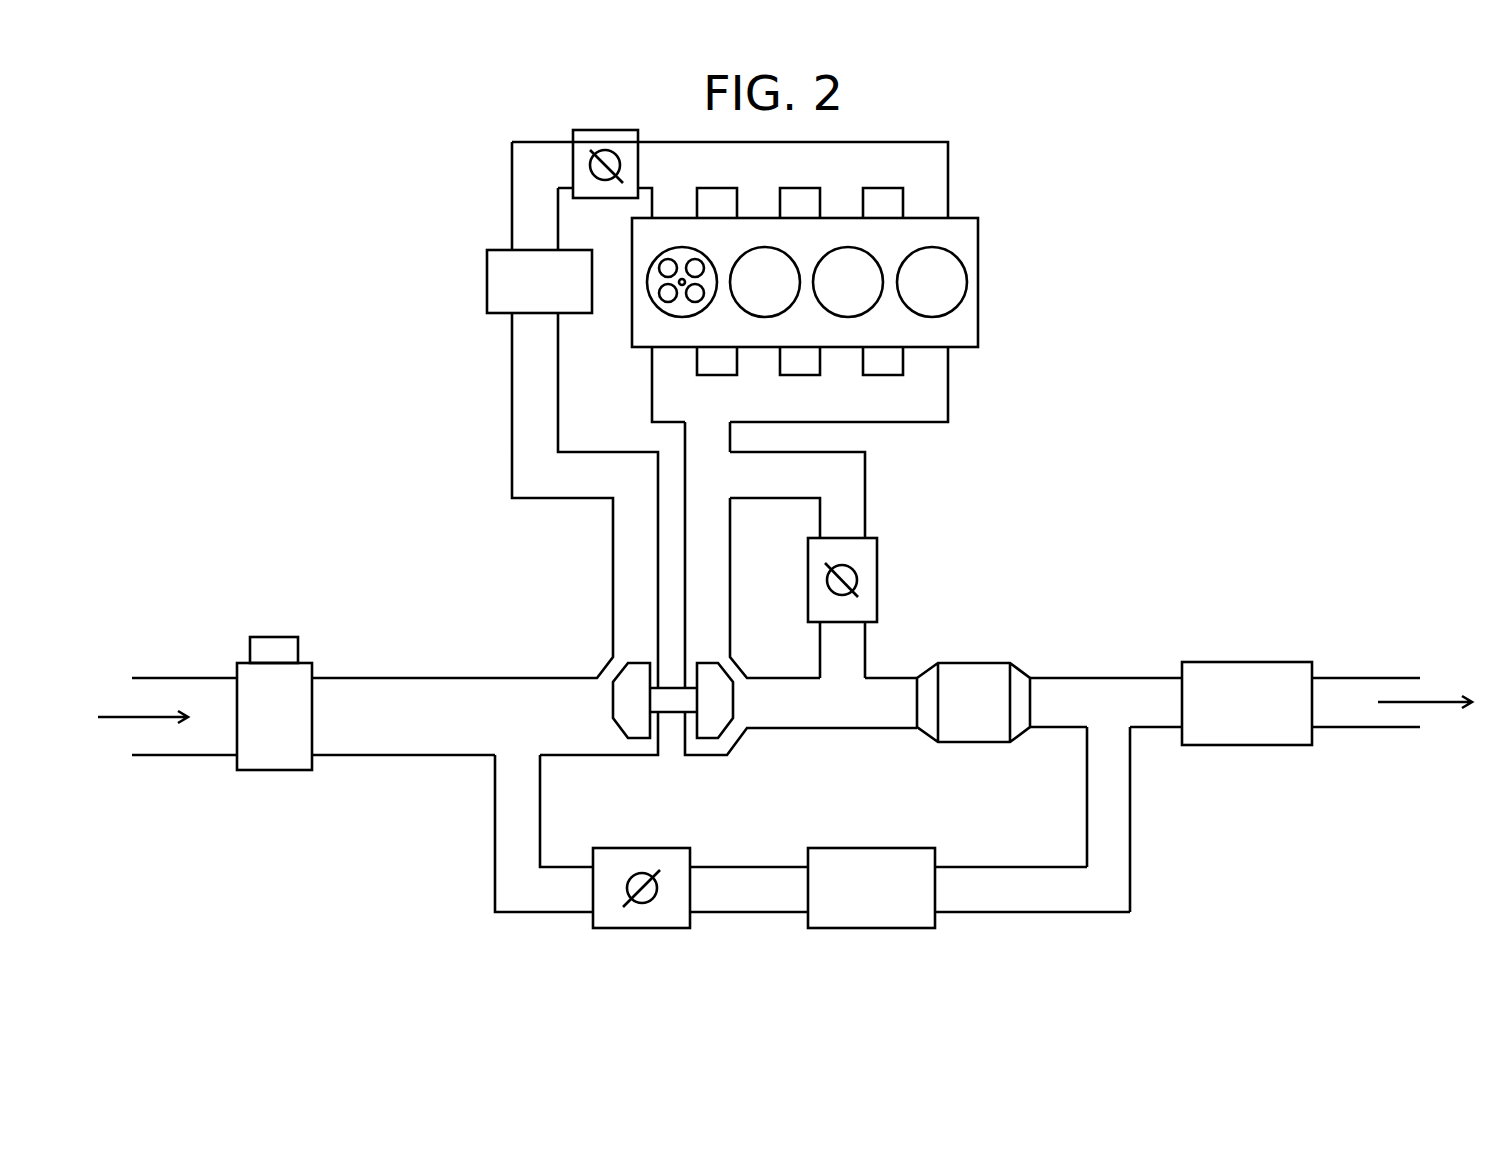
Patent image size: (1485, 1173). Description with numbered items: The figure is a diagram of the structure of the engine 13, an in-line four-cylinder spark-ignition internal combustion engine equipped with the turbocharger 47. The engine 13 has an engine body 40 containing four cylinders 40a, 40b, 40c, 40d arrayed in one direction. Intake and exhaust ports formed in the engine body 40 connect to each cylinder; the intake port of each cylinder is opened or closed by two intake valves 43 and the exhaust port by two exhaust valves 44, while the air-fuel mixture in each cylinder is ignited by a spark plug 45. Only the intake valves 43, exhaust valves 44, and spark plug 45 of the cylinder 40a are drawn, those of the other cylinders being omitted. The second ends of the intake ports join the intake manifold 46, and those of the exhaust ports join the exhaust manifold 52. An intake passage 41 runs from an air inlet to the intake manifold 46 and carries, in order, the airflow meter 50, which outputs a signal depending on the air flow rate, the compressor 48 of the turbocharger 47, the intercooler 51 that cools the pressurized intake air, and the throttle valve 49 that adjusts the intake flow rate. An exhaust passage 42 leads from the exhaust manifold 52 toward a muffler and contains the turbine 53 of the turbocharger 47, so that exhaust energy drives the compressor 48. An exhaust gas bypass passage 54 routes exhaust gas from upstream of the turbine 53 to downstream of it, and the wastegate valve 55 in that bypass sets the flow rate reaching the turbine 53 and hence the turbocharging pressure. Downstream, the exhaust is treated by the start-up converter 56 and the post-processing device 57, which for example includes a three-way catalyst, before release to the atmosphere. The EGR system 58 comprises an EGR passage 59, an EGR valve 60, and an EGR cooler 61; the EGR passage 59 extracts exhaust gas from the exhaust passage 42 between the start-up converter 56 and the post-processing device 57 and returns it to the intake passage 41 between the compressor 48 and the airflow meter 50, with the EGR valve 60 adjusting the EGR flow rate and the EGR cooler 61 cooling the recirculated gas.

The engine 13 is at (1216, 378).
The engine body 40 is at (980, 260).
The cylinder 40a is at (672, 247).
The cylinder 40b is at (765, 247).
The cylinder 40c is at (848, 247).
The cylinder 40d is at (931, 247).
The intake passage 41 is at (506, 418).
The exhaust passage 42 is at (1097, 666).
The intake valve 43 is at (659, 261).
The exhaust valve 44 is at (660, 300).
The spark plug 45 is at (679, 283).
The intake manifold 46 is at (950, 153).
The turbocharger 47 is at (742, 721).
The compressor 48 is at (622, 718).
The throttle valve 49 is at (575, 165).
The airflow meter 50 is at (275, 763).
The intercooler 51 is at (495, 285).
The exhaust manifold 52 is at (946, 388).
The turbine 53 is at (710, 718).
The exhaust gas bypass passage 54 is at (867, 490).
The wastegate valve 55 is at (867, 562).
The start-up converter 56 is at (973, 673).
The post-processing device 57 is at (1246, 672).
The exhaust gas recirculation (EGR) system 58 is at (1142, 846).
The EGR passage 59 is at (1047, 898).
The EGR valve 60 is at (662, 912).
The EGR cooler 61 is at (877, 913).